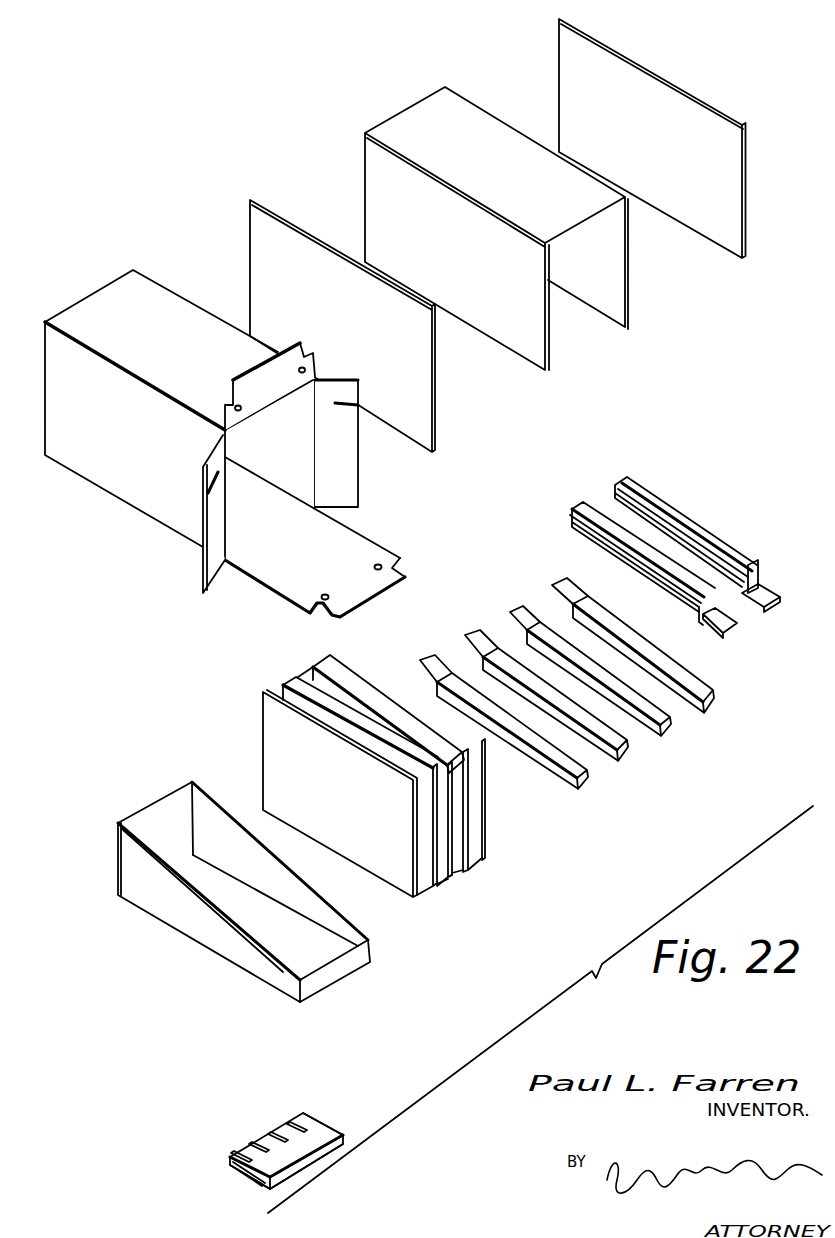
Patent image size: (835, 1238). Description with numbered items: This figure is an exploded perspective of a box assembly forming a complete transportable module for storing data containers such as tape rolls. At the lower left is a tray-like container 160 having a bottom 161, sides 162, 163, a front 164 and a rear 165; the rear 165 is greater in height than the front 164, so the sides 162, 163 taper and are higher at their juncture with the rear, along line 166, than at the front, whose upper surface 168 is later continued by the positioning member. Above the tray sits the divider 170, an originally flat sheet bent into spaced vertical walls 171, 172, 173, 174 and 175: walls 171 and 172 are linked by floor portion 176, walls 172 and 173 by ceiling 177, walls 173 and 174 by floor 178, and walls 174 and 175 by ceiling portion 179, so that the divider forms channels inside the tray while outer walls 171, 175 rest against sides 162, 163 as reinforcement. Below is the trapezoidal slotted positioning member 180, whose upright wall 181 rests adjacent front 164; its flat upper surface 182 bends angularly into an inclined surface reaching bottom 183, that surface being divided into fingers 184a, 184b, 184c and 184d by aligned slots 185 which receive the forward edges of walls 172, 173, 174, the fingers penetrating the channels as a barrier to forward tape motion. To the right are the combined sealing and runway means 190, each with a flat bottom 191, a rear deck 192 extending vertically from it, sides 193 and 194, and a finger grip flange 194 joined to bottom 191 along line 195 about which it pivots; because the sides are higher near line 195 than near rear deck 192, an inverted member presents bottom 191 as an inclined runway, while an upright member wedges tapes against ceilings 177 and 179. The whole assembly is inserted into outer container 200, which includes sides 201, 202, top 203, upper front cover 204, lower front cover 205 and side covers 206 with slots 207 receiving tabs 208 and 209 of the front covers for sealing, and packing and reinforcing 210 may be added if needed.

The tray-like container 160 is at (261, 866).
The bottom 161 is at (272, 928).
The side 162 is at (172, 923).
The side 163 is at (312, 888).
The front 164 is at (370, 951).
The rear 165 is at (172, 790).
The line 166 is at (193, 820).
The upper surface 168 is at (333, 962).
The divider 170 is at (378, 776).
The vertical wall 171 is at (275, 712).
The vertical wall 172 is at (280, 692).
The vertical wall 173 is at (443, 872).
The vertical wall 174 is at (312, 670).
The vertical wall 175 is at (485, 838).
The floor portion 176 is at (428, 897).
The ceiling 177 is at (378, 723).
The floor 178 is at (466, 873).
The ceiling portion 179 is at (373, 680).
The slotted positioning member 180 is at (277, 1128).
The upright wall 181 is at (283, 1180).
The flat upper surface 182 is at (330, 1133).
The bottom 183 is at (237, 1172).
The finger 184a is at (295, 1118).
The finger 184b is at (277, 1132).
The finger 184c is at (255, 1140).
The finger 184d is at (237, 1150).
The slots 185 is at (305, 1116).
The combined sealing and runway means 190 is at (619, 628).
The flat bottom 191 is at (572, 512).
The rear deck 192 is at (615, 487).
The side 193 is at (603, 547).
The flange 194 is at (522, 605).
The line 195 is at (748, 565).
The outer container 200 is at (255, 411).
The side 201 is at (98, 414).
The side 202 is at (292, 453).
The top 203 is at (125, 293).
The upper front cover 204 is at (230, 398).
The lower front cover 205 is at (360, 530).
The side covers 206 is at (202, 580).
The slots 207 is at (203, 493).
The tab 208 is at (265, 360).
The tab 209 is at (407, 570).
The packing and reinforcing 210 is at (559, 68).